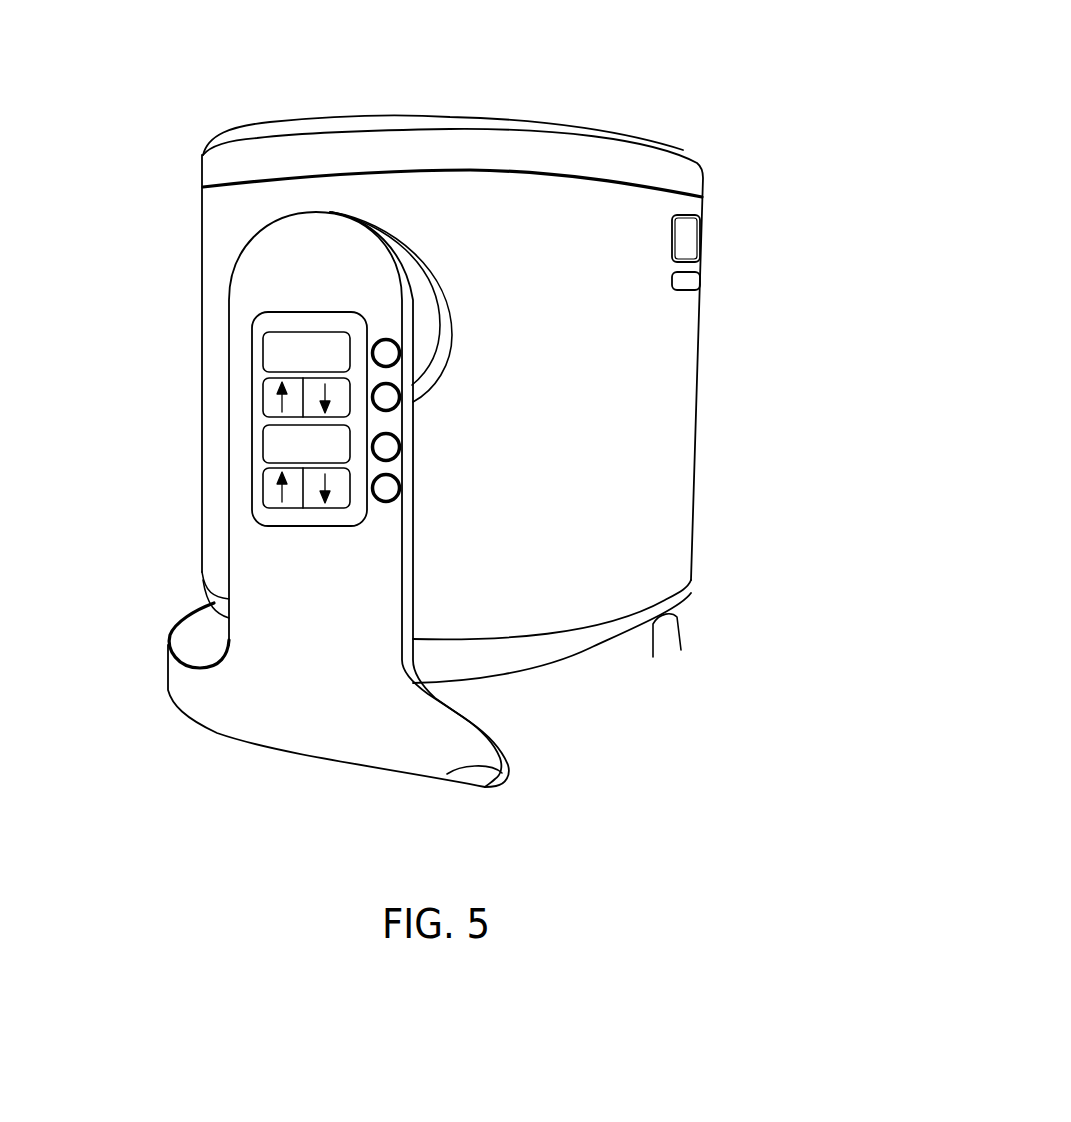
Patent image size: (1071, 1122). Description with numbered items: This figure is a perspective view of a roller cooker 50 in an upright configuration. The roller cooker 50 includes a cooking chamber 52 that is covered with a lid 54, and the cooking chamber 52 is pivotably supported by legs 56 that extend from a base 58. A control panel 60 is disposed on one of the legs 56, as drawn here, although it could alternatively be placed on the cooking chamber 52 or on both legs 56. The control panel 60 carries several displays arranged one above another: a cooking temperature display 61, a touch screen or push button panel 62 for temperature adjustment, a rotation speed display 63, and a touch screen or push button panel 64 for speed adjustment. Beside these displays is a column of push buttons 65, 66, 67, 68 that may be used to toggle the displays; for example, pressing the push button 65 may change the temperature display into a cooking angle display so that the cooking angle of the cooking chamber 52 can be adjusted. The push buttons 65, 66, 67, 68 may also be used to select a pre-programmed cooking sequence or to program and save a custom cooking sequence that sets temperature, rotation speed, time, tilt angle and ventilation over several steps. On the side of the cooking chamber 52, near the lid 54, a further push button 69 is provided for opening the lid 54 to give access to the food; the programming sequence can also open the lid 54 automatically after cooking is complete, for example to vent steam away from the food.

The roller cooker 50 is at (628, 84).
The cooking chamber 52 is at (660, 531).
The lid 54 is at (683, 150).
The legs 56 is at (290, 570).
The base 58 is at (507, 780).
The control panel 60 is at (253, 283).
The cooking temperature display 61 is at (263, 352).
The touch screen/push button panel for temperature adjustment 62 is at (263, 392).
The rotation speed display 63 is at (263, 443).
The touch screen/push button panel for speed adjustment 64 is at (263, 490).
The push button 65 is at (402, 350).
The push button 66 is at (402, 397).
The push button 67 is at (402, 447).
The push button 68 is at (402, 489).
The push button for opening the lid 69 is at (697, 243).